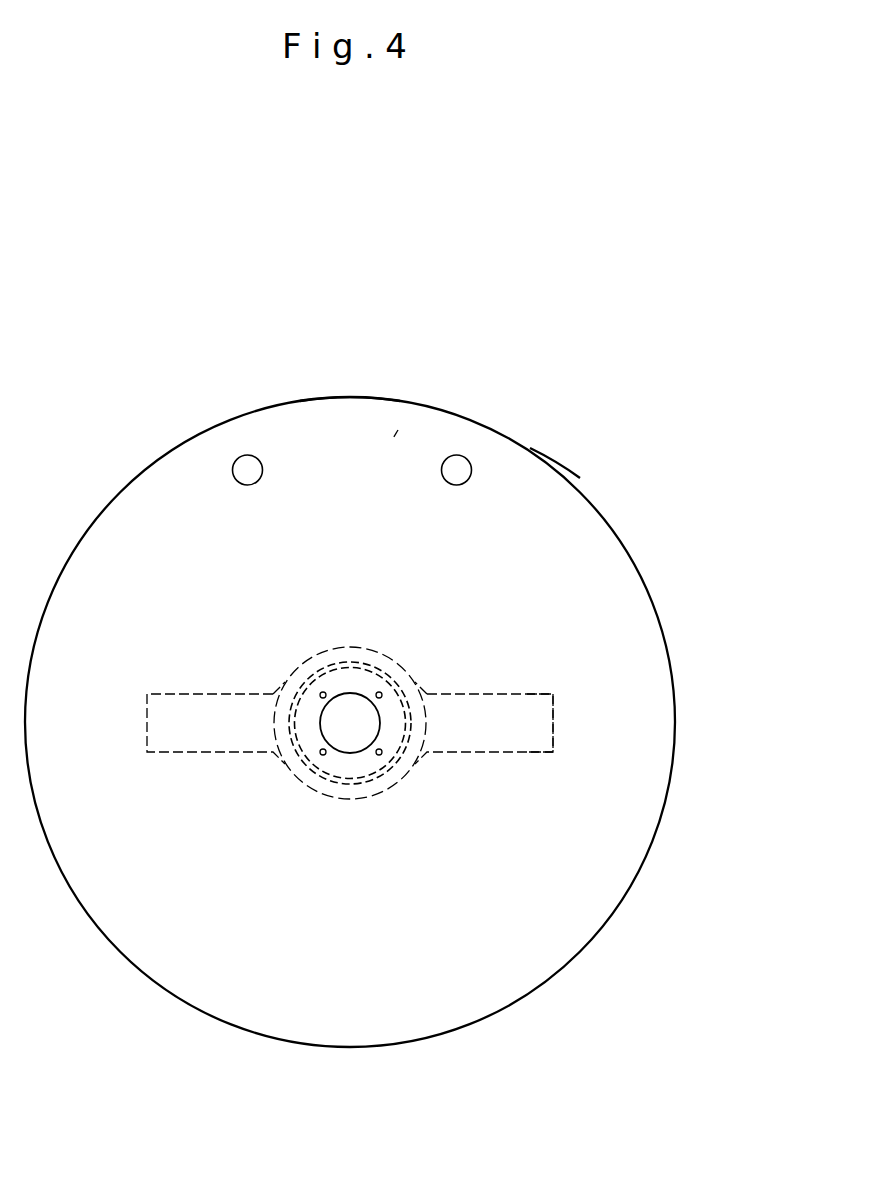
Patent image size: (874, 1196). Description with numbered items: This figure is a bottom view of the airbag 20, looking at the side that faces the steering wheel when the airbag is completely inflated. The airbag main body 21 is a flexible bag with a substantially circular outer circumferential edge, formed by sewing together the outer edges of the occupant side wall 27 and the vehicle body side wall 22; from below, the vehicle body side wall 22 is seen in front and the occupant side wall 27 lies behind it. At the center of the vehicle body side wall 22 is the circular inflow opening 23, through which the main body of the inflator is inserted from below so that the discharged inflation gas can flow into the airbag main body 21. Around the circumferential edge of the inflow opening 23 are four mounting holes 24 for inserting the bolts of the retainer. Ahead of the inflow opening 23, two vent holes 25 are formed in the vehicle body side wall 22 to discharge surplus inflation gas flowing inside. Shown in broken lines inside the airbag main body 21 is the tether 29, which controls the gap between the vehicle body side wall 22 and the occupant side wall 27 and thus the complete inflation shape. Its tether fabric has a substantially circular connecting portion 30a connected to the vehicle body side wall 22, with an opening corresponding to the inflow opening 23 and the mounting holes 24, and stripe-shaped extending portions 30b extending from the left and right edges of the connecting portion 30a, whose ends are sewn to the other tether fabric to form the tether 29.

The airbag 20 is at (520, 383).
The airbag main body 21 is at (580, 478).
The vehicle body side wall 22 is at (344, 428).
The inflow opening 23 is at (350, 753).
The mounting holes 24 is at (321, 749).
The vent hole 25 is at (246, 476).
The occupant side wall 27 is at (398, 430).
The tether 29 is at (478, 757).
The connecting portion 30a is at (362, 790).
The extending portion 30b is at (527, 705).